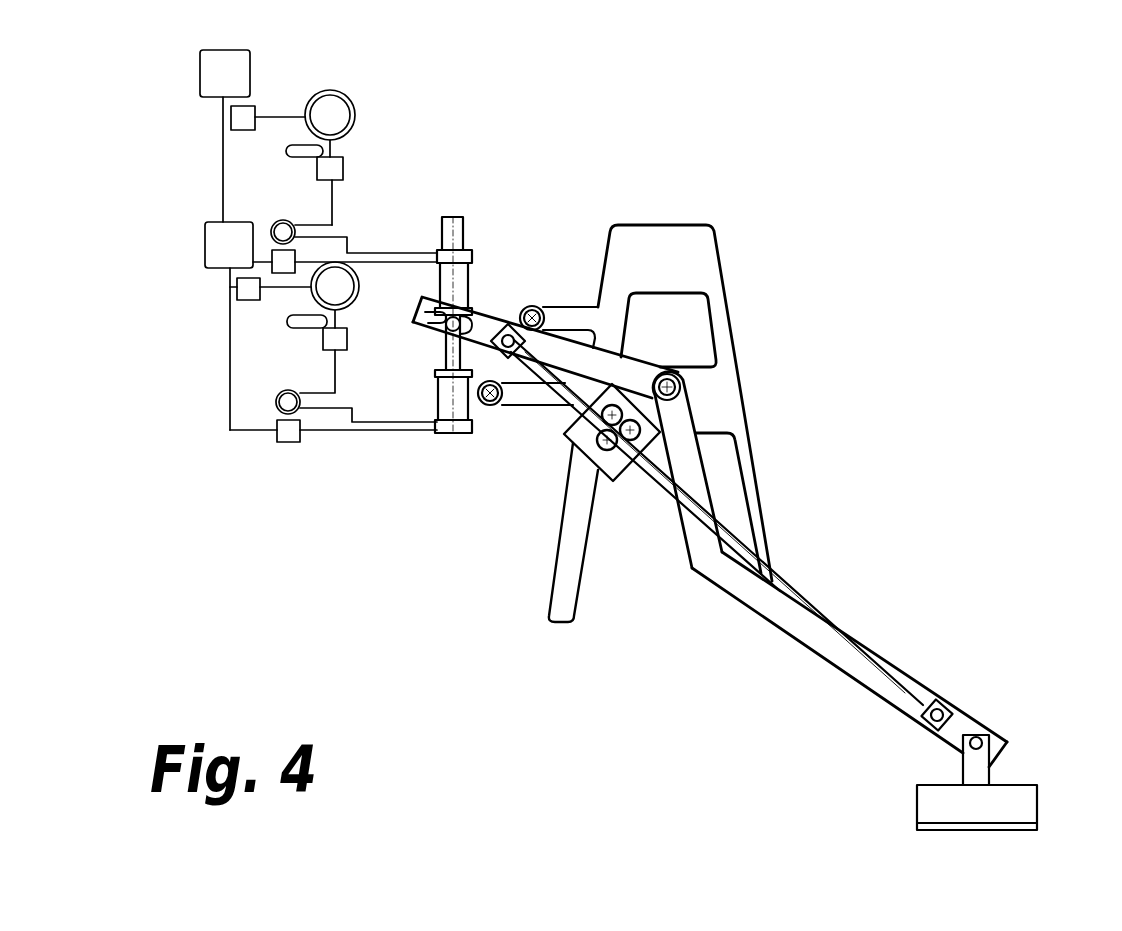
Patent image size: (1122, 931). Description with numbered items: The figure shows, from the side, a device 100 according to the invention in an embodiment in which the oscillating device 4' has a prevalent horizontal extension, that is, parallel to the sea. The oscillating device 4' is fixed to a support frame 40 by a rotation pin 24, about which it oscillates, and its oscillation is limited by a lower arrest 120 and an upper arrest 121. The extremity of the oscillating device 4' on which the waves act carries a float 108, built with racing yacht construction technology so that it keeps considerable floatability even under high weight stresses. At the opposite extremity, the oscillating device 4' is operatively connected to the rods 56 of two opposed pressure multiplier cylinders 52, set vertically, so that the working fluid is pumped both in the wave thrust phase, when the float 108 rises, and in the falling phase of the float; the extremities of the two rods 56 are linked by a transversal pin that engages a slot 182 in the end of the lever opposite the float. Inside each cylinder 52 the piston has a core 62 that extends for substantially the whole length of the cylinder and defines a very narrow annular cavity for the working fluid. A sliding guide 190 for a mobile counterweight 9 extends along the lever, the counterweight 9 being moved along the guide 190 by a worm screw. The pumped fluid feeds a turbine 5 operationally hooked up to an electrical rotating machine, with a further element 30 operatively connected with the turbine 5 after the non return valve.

The turbine 5 is at (352, 108).
The element operatively connected with the turbine 30 is at (300, 157).
The core 62 is at (440, 228).
The rod 56 is at (428, 372).
The pressure multiplier cylinder 52 is at (475, 272).
The slot 182 is at (427, 315).
The upper arrest 121 is at (532, 306).
The lower arrest 120 is at (494, 406).
The support frame 40 is at (722, 267).
The rotation pin 24 is at (667, 374).
The oscillating device 4' is at (726, 465).
The sliding guide 190 is at (762, 555).
The mobile counterweight 9 is at (632, 470).
The float 108 is at (1037, 805).
The device 100 is at (584, 160).